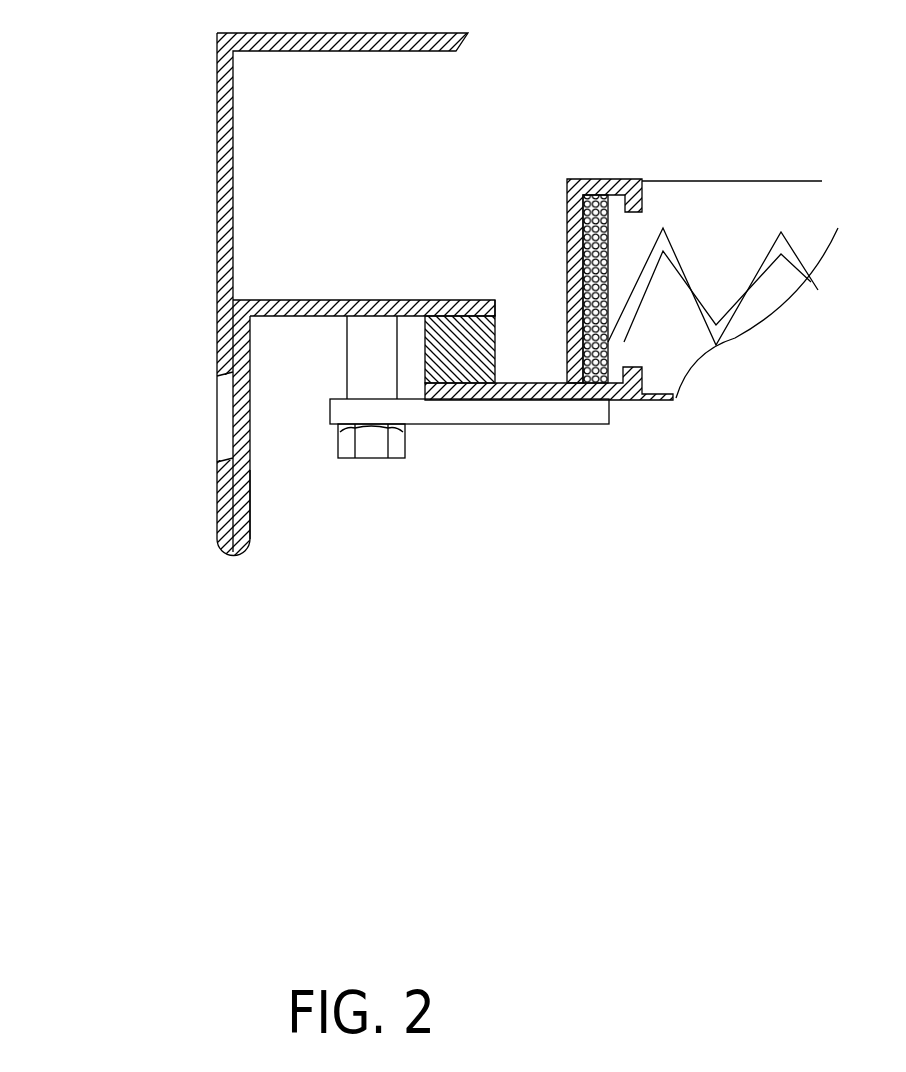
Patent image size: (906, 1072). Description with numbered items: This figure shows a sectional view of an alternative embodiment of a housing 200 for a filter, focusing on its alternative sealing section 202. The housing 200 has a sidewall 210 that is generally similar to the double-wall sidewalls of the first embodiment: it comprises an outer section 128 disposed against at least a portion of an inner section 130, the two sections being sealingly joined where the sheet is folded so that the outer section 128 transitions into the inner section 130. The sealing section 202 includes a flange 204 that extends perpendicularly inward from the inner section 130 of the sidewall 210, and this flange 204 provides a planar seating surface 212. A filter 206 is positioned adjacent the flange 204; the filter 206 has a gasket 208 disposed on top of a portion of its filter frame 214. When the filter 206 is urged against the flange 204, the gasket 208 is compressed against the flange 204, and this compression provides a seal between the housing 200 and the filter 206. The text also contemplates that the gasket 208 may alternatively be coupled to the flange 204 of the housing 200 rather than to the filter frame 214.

The housing 200 is at (190, 158).
The outer section 128 is at (217, 262).
The sidewall 210 is at (217, 348).
The inner section 130 is at (250, 497).
The sealing section 202 is at (296, 300).
The flange 204 is at (492, 300).
The planar seating surface 212 is at (470, 300).
The gasket 208 is at (467, 350).
The filter 206 is at (589, 172).
The filter frame 214 is at (490, 383).